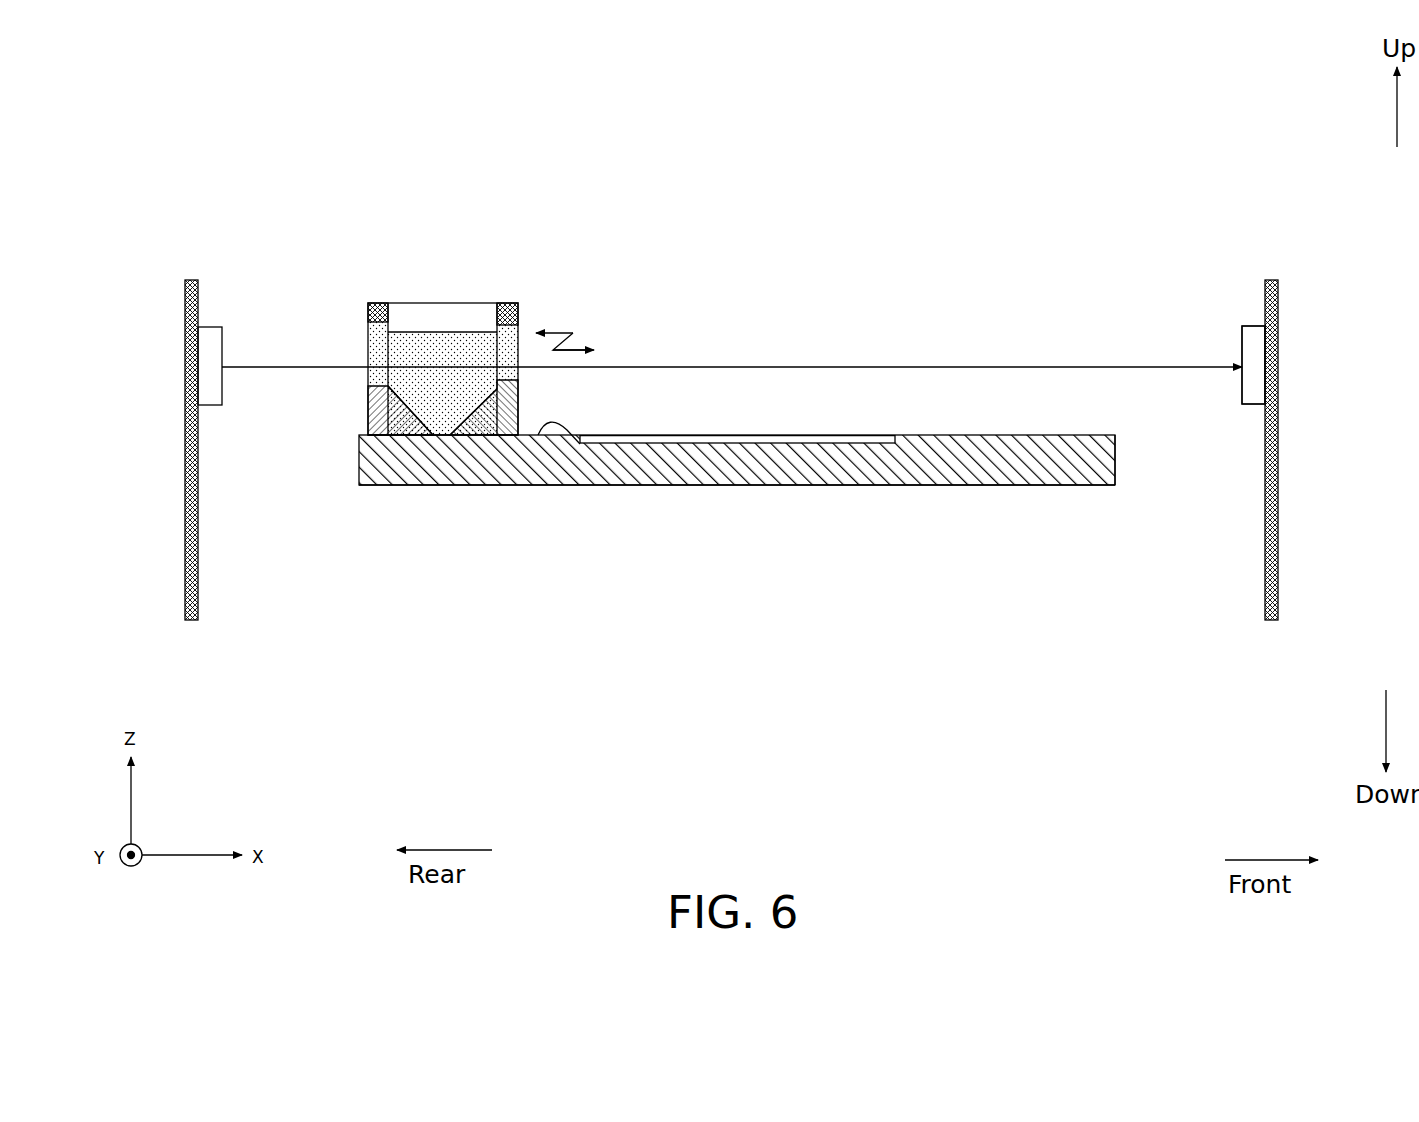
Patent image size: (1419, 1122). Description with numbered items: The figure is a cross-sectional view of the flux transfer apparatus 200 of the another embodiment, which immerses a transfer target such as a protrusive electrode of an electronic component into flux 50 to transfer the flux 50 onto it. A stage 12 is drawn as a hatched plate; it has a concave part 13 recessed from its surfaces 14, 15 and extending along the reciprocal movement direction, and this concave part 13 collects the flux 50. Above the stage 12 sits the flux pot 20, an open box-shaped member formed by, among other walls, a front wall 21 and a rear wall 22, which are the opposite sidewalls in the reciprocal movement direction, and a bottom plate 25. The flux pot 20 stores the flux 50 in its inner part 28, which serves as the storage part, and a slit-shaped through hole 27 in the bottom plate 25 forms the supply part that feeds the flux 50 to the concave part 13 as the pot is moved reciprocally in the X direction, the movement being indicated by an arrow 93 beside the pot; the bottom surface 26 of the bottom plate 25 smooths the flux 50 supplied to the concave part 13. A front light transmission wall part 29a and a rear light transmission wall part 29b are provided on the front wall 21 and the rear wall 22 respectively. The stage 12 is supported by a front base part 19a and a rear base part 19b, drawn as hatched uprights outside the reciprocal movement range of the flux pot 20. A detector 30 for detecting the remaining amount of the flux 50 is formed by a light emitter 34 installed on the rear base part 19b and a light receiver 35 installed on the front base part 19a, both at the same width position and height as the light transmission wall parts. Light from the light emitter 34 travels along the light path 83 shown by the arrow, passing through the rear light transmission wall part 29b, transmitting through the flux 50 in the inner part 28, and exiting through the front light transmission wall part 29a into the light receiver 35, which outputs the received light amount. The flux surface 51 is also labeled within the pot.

The flux transfer apparatus 200 is at (123, 108).
The front base part 19a is at (1272, 590).
The rear base part 19b is at (190, 572).
The light emitter 34 is at (207, 407).
The detector 30 is at (1245, 408).
The light receiver 35 is at (1252, 408).
The light path 83 is at (1143, 367).
The stage 12 is at (950, 485).
The concave part 13 is at (880, 440).
The surface 14 is at (585, 485).
The surface 15 is at (1115, 435).
The flux pot 20 is at (368, 317).
The front wall 21 is at (512, 303).
The rear wall 22 is at (372, 303).
The bottom plate 25 is at (380, 485).
The bottom surface 26 is at (415, 437).
The through hole 27 is at (455, 437).
The inner part 28 is at (477, 390).
The front light transmission wall part 29a is at (518, 377).
The rear light transmission wall part 29b is at (363, 388).
The flux 50 is at (460, 356).
The liquid surface 51 is at (413, 332).
The arrow 93 is at (553, 327).